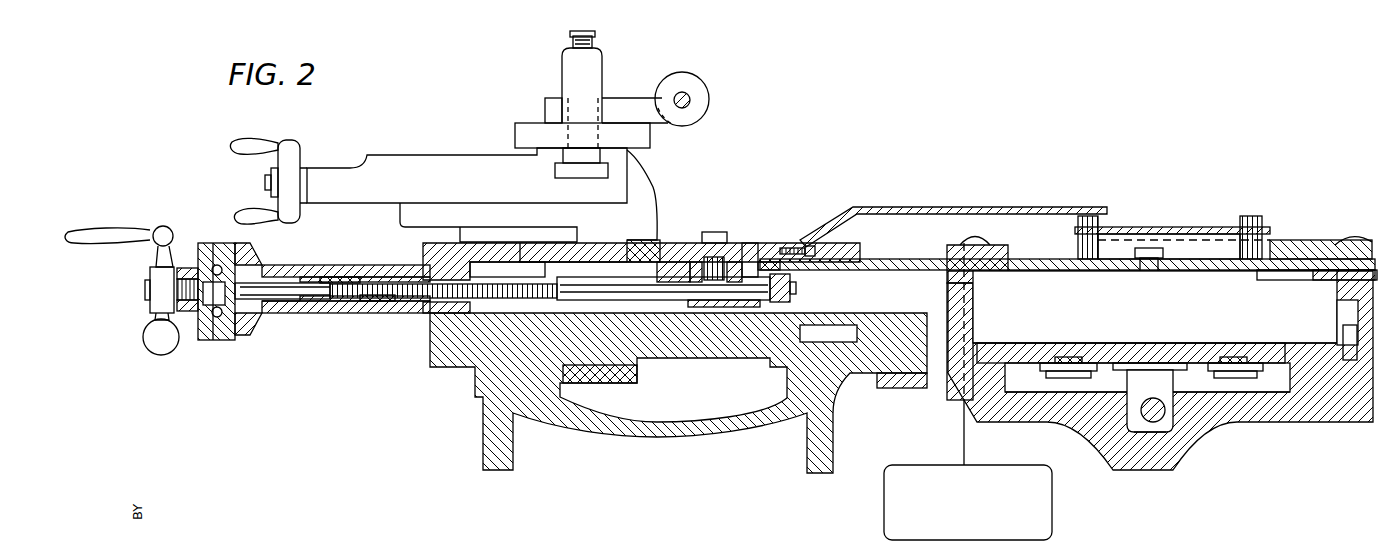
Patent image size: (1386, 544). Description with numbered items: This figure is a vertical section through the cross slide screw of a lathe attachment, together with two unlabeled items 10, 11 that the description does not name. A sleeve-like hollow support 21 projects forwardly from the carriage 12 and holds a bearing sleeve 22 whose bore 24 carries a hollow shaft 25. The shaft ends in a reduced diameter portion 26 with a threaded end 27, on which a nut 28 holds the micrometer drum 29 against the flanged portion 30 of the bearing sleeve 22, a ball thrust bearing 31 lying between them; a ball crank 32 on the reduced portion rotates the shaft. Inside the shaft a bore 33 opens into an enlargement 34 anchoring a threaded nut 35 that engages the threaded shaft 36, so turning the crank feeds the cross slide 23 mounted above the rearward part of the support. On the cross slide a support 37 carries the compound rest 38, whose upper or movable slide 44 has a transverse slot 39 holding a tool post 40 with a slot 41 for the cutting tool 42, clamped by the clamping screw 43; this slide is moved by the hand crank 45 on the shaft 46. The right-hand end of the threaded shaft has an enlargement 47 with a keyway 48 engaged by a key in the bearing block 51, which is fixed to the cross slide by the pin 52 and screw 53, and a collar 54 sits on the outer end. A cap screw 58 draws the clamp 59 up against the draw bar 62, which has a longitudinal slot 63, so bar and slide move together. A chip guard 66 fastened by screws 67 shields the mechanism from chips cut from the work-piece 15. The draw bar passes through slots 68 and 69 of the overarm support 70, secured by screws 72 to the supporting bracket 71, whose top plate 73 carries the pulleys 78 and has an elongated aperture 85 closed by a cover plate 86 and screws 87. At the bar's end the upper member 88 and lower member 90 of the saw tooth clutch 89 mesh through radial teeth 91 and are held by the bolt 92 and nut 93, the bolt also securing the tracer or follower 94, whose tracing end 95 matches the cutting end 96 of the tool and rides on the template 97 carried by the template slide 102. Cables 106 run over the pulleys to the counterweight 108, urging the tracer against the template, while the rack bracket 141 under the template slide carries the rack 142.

The base 10 is at (475, 385).
The section line / bed rail 11 is at (788, 305).
The carriage 12 is at (734, 378).
The work-piece 15 is at (692, 100).
The sleeve-like hollow support 21 is at (347, 266).
The bearing sleeve 22 is at (288, 266).
The cross slide 23 is at (423, 248).
The bore 24 is at (254, 262).
The hollow shaft 25 is at (272, 305).
The reduced diameter portion 26 is at (213, 323).
The threaded end 27 is at (178, 290).
The nut 28 is at (185, 266).
The micrometer drum 29 is at (213, 242).
The flanged portion 30 is at (234, 338).
The ball thrust bearing 31 is at (213, 342).
The ball crank 32 is at (160, 228).
The bore 33 is at (305, 300).
The enlargement 34 is at (357, 302).
The threaded nut 35 is at (390, 302).
The threaded shaft 36 is at (420, 335).
The support 37 is at (400, 215).
The compound rest 38 is at (490, 148).
The transverse slot 39 is at (554, 172).
The tool post 40 is at (600, 62).
The slot 41 is at (562, 98).
The cutting tool 42 is at (620, 98).
The clamping screw 43 is at (570, 36).
The upper or movable slide 44 is at (390, 156).
The hand crank 45 is at (290, 141).
The shaft 46 is at (270, 178).
The enlargement 47 is at (613, 297).
The keyway 48 is at (592, 300).
The bearing block 51 is at (733, 250).
The pin 52 is at (762, 252).
The screw 53 is at (719, 230).
The collar 54 is at (797, 288).
The cap screw 58 is at (650, 240).
The clamp 59 is at (645, 262).
The draw bar 62 is at (895, 271).
The longitudinal slot 63 is at (582, 260).
The chip guard 66 is at (943, 207).
The screws 67 is at (816, 251).
The slot 68 is at (1005, 281).
The slot 69 is at (1330, 281).
The overarm support 70 is at (1337, 327).
The supporting bracket 71 is at (1300, 423).
The screws 72 is at (1351, 328).
The top plate 73 is at (1300, 240).
The pulleys 78 is at (977, 240).
The elongated aperture 85 is at (1116, 240).
The cover plate 86 is at (1180, 227).
The screws 87 is at (1087, 215).
The upper member of saw tooth clutch 88 is at (1118, 281).
The saw tooth clutch 89 is at (1212, 306).
The lower member 90 is at (1118, 316).
The radial teeth 91 is at (1118, 300).
The bolt 92 is at (1144, 318).
The nut 93 is at (1151, 248).
The tracer or follower 94 is at (1150, 397).
The tracing end 95 is at (1214, 296).
The cutting end 96 is at (680, 73).
The template 97 is at (1222, 318).
The template slide 102 is at (1060, 342).
The cables 106 is at (1288, 240).
The counterweight 108 is at (1054, 503).
The rack bracket 141 is at (1165, 415).
The rack 142 is at (1153, 425).